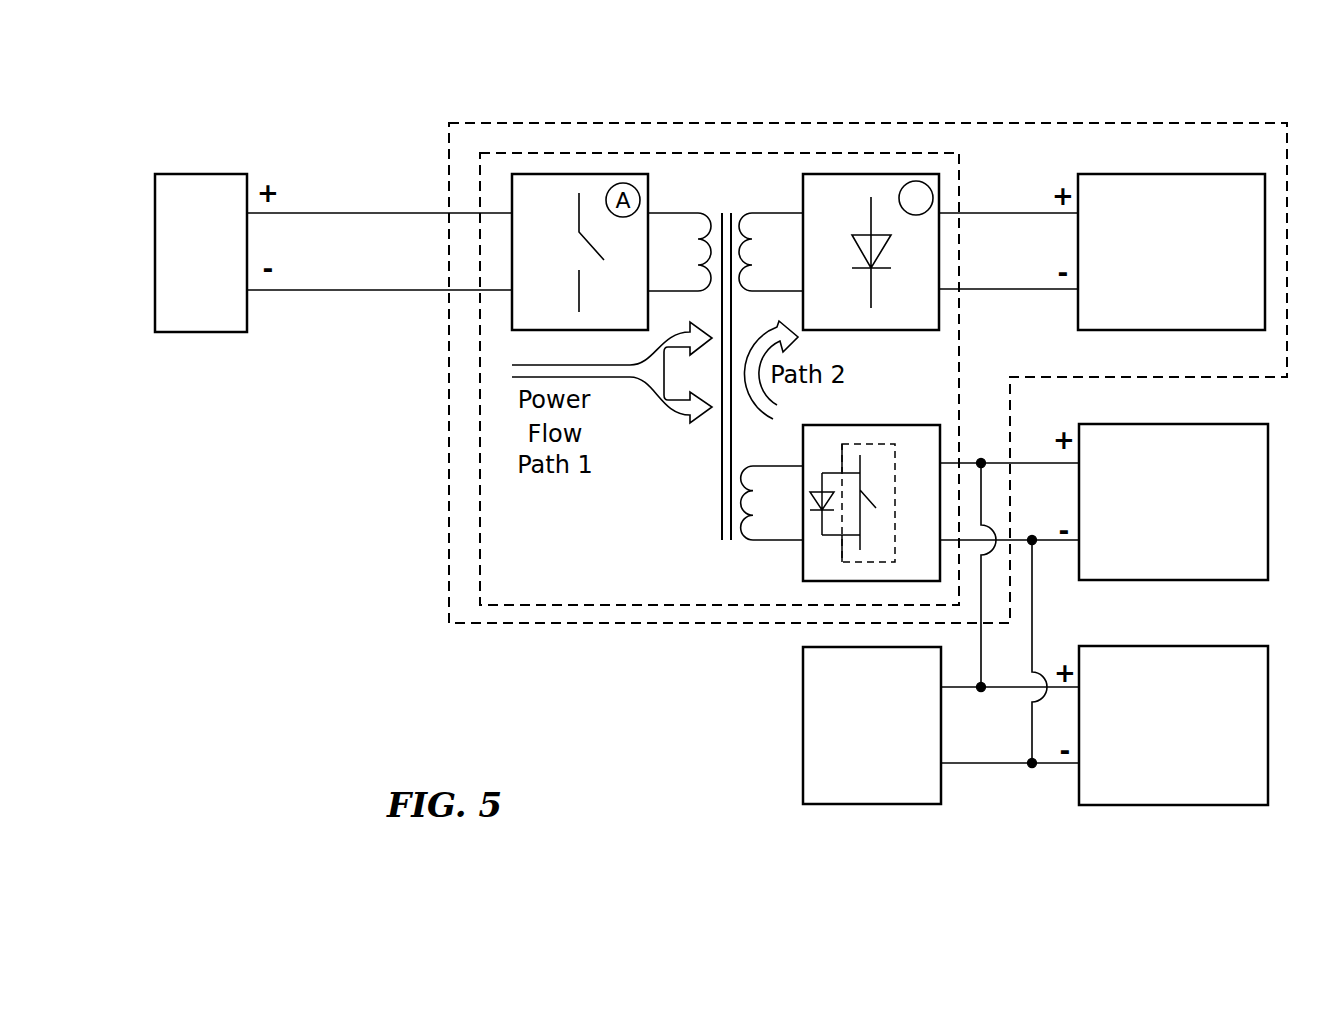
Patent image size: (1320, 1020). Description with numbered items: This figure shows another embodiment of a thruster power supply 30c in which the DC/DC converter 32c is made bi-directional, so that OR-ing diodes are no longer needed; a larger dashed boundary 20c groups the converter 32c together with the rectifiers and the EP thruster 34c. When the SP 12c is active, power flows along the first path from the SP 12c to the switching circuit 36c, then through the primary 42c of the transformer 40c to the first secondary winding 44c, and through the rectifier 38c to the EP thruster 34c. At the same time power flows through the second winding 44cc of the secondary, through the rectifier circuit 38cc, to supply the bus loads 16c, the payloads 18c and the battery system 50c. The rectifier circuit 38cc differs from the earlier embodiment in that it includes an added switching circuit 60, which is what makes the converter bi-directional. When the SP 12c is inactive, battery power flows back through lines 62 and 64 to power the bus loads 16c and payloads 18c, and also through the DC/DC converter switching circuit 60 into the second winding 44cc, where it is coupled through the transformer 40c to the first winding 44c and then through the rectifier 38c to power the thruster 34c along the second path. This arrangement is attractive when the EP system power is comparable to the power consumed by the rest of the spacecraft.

The power system 30c is at (998, 39).
The power processing unit 20c is at (1120, 123).
The DC/DC converter 32c is at (960, 170).
The SP 12c is at (178, 293).
The switching circuit 36c is at (512, 192).
The primary 42c is at (657, 212).
The first secondary winding 44c is at (793, 212).
The second winding 44cc is at (780, 540).
The transformer 40c is at (697, 475).
The rectifier 38c is at (862, 330).
The rectifier circuit 38cc is at (879, 483).
The switching circuit 60 is at (895, 502).
The EP thruster 34c is at (1195, 306).
The bus loads 16c is at (1195, 541).
The payloads 18c is at (1195, 766).
The battery system 50c is at (895, 774).
The line 62 is at (983, 648).
The line 64 is at (1032, 613).